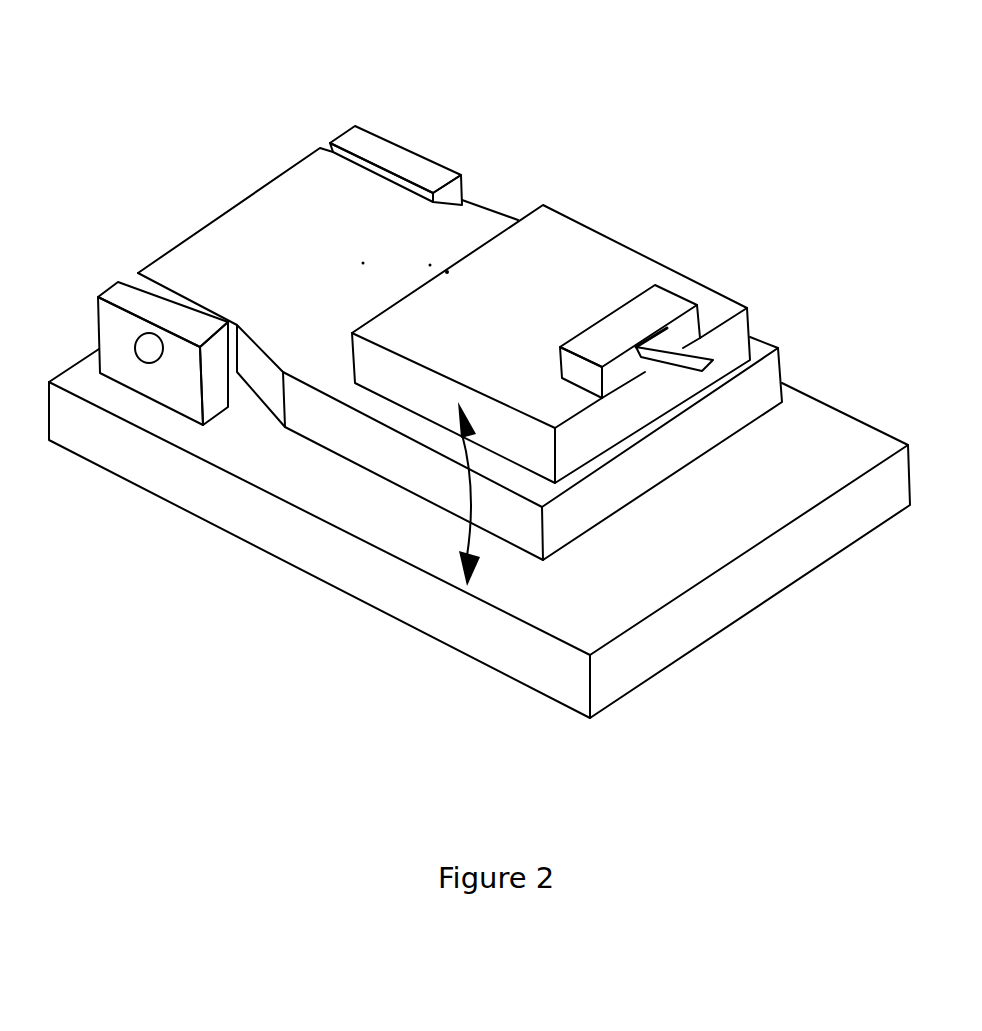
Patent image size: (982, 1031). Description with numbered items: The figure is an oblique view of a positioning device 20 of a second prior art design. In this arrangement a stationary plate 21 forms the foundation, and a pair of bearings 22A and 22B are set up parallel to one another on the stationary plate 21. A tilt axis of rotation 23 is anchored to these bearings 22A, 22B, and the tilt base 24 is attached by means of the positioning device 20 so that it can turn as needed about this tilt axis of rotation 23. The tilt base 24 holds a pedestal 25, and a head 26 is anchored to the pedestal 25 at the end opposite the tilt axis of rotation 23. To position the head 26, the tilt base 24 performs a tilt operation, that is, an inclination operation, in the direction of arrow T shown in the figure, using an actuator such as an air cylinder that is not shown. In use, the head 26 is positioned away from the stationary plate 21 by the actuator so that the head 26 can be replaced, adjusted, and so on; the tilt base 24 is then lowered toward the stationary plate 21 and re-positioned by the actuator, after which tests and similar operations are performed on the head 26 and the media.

The positioning device 20 is at (475, 390).
The stationary plate 21 is at (423, 600).
The bearing 22A is at (123, 300).
The bearing 22B is at (367, 147).
The tilt axis of rotation 23 is at (150, 348).
The tilt base 24 is at (468, 233).
The pedestal 25 is at (560, 281).
The head 26 is at (657, 317).
The arrow T is at (470, 502).